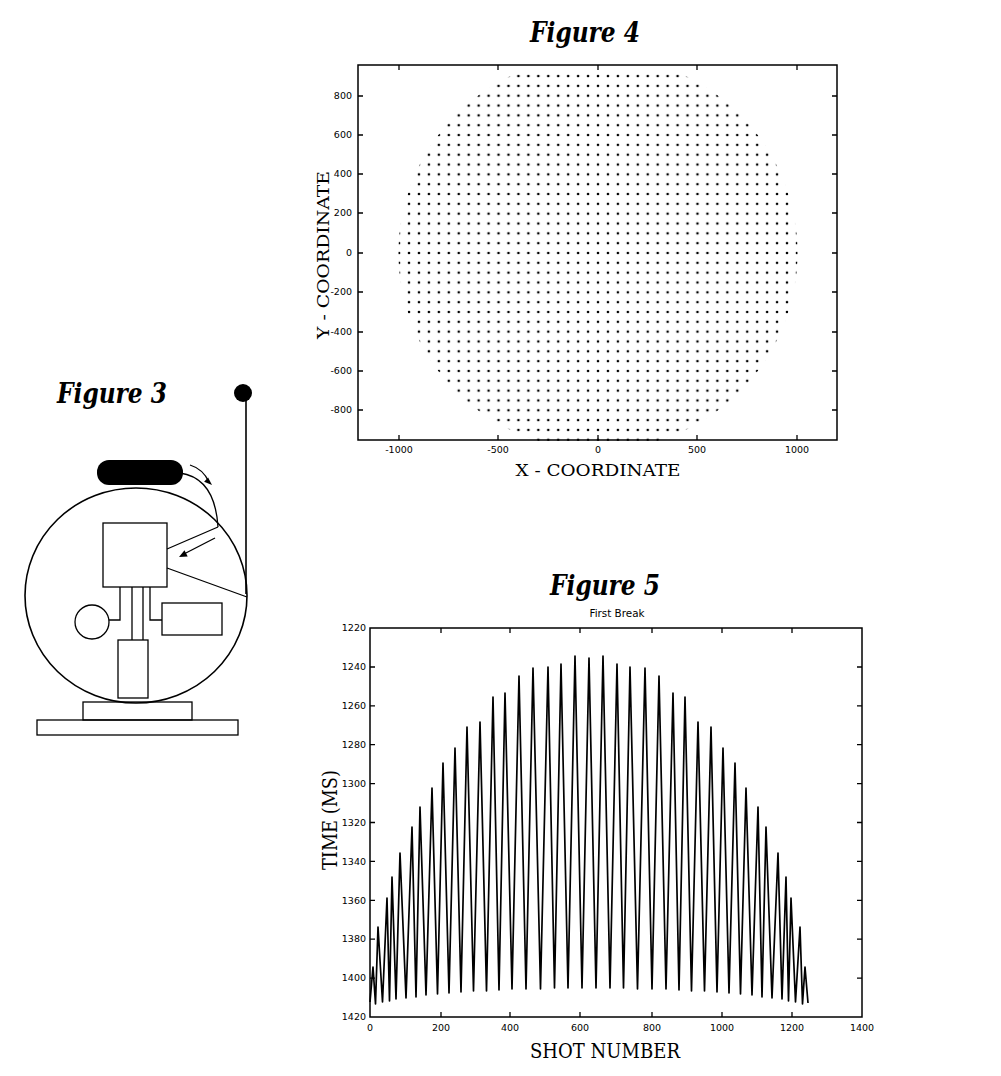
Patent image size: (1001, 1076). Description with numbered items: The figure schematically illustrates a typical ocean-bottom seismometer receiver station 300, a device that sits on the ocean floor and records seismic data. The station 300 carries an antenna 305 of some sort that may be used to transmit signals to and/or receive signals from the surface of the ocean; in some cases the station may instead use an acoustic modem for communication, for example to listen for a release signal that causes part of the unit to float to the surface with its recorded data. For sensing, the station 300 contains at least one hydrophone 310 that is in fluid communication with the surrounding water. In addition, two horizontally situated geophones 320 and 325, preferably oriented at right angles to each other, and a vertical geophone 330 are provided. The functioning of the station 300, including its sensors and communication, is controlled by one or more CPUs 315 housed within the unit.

The OBS receiver station 300 is at (268, 557).
The antenna 305 is at (247, 458).
The hydrophone 310 is at (112, 459).
The CPU 315 is at (103, 546).
The horizontally situated geophone 320 is at (86, 605).
The horizontally situated geophone 325 is at (168, 604).
The vertical geophone 330 is at (148, 669).